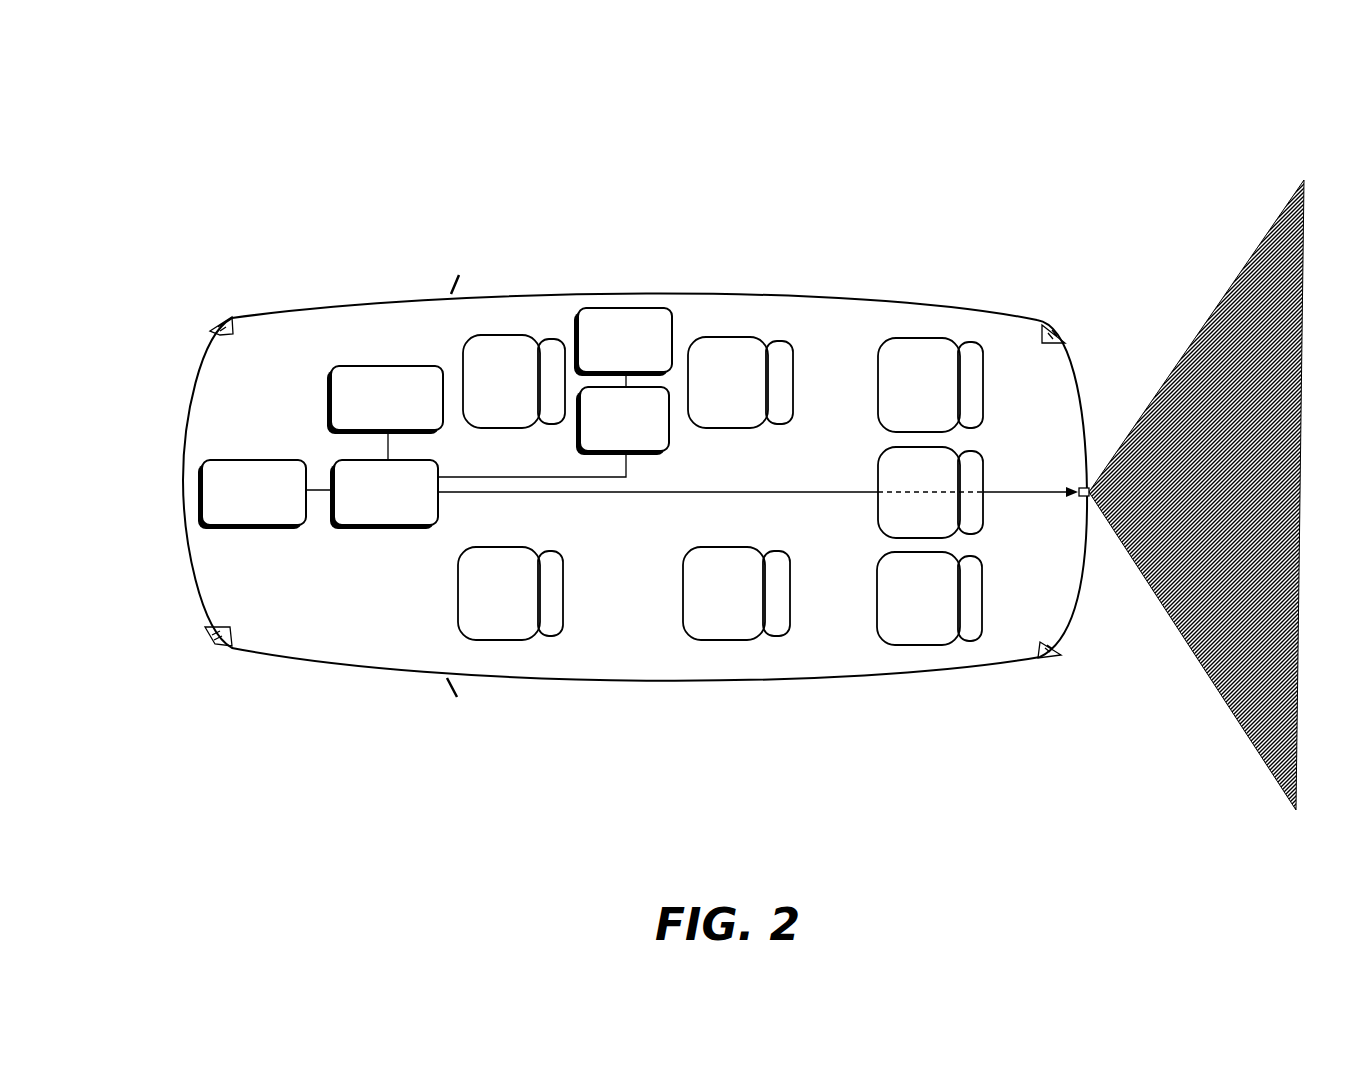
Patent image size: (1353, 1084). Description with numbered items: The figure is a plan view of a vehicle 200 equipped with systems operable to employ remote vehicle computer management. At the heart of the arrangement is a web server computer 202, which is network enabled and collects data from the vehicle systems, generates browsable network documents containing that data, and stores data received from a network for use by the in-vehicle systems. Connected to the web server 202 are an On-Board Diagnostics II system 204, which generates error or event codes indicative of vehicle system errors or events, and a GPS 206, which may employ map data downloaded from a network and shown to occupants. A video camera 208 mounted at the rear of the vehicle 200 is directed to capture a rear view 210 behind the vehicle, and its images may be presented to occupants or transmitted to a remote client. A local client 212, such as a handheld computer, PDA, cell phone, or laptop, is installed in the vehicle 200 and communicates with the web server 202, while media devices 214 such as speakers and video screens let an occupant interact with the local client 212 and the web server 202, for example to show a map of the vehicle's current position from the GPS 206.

The vehicle 200 is at (219, 100).
The web server computer 202 is at (370, 525).
The On-Board Diagnostics II (OBDII) system 204 is at (252, 525).
The GPS 206 is at (390, 367).
The video camera 208 is at (1082, 497).
The rear view 210 is at (1247, 275).
The local client 212 is at (640, 451).
The media devices 214 is at (672, 323).